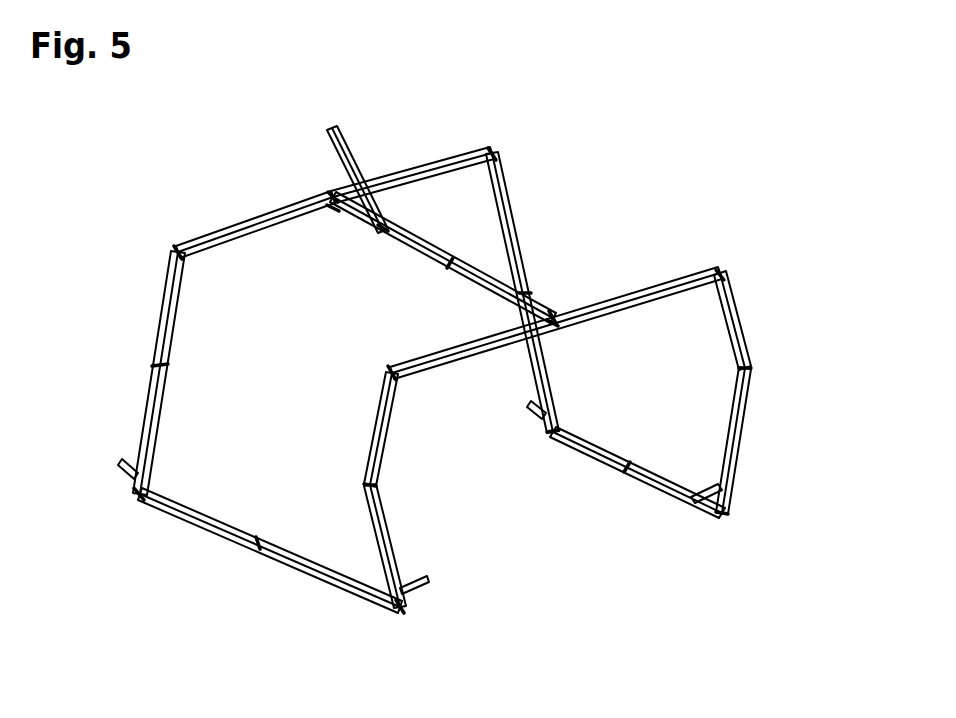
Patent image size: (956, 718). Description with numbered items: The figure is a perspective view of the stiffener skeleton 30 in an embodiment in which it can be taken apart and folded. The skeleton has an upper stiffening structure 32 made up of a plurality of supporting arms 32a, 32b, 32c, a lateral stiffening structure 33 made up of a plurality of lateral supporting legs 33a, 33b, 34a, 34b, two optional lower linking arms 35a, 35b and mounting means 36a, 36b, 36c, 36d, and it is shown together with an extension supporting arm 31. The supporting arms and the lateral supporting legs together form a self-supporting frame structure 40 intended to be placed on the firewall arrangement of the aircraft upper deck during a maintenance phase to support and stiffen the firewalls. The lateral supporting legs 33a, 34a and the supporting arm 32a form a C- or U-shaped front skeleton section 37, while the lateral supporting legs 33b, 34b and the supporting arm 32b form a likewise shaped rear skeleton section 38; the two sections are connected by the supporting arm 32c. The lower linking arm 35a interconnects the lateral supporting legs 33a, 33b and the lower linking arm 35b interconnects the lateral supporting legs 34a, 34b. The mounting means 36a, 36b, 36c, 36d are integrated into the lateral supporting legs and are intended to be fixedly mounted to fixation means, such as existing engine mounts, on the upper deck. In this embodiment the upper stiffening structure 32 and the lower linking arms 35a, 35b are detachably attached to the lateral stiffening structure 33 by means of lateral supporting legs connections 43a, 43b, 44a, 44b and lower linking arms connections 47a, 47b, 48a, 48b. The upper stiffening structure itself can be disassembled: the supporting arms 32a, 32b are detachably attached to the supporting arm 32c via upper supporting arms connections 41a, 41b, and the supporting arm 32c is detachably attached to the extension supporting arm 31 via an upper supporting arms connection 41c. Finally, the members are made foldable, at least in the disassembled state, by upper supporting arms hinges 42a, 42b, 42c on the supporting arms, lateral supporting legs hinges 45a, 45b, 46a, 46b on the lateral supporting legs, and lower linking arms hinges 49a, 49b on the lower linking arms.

The stiffener skeleton 30 is at (280, 392).
The self-supporting frame structure 40 is at (671, 360).
The extension supporting arm 31 is at (334, 126).
The upper stiffening structure 32 is at (412, 165).
The supporting arm 32a is at (198, 237).
The supporting arm 32b is at (686, 280).
The supporting arm 32c is at (395, 238).
The lateral stiffening structure 33 is at (756, 420).
The lateral supporting leg 33a is at (148, 422).
The lateral supporting leg 33b is at (377, 428).
The lateral supporting leg 34a is at (497, 187).
The lateral supporting leg 34b is at (737, 317).
The lower linking arm 35a is at (192, 520).
The lower linking arm 35b is at (668, 488).
The mounting means 36a is at (118, 482).
The mounting means 36b is at (428, 595).
The mounting means 36c is at (527, 421).
The mounting means 36d is at (697, 510).
The front skeleton section 37 is at (113, 373).
The rear skeleton section 38 is at (367, 519).
The upper supporting arms connection 41a is at (333, 210).
The upper supporting arms connection 41b is at (553, 308).
The upper supporting arms connection 41c is at (398, 222).
The upper supporting arms hinge 42a is at (332, 190).
The upper supporting arms hinge 42b is at (560, 330).
The upper supporting arms hinge 42c is at (437, 277).
The lateral supporting legs connection 43a is at (172, 245).
The lateral supporting legs connection 43b is at (385, 370).
The lateral supporting legs connection 44a is at (496, 150).
The lateral supporting legs connection 44b is at (726, 270).
The lateral supporting legs hinge 45a is at (151, 366).
The lateral supporting legs hinge 45b is at (364, 485).
The lateral supporting legs hinge 46a is at (531, 288).
The lateral supporting legs hinge 46b is at (752, 368).
The lower linking arms connection 47a is at (127, 503).
The lower linking arms connection 47b is at (392, 615).
The lower linking arms connection 48a is at (540, 440).
The lower linking arms connection 48b is at (727, 518).
The lower linking arms hinge 49a is at (257, 548).
The lower linking arms hinge 49b is at (620, 473).